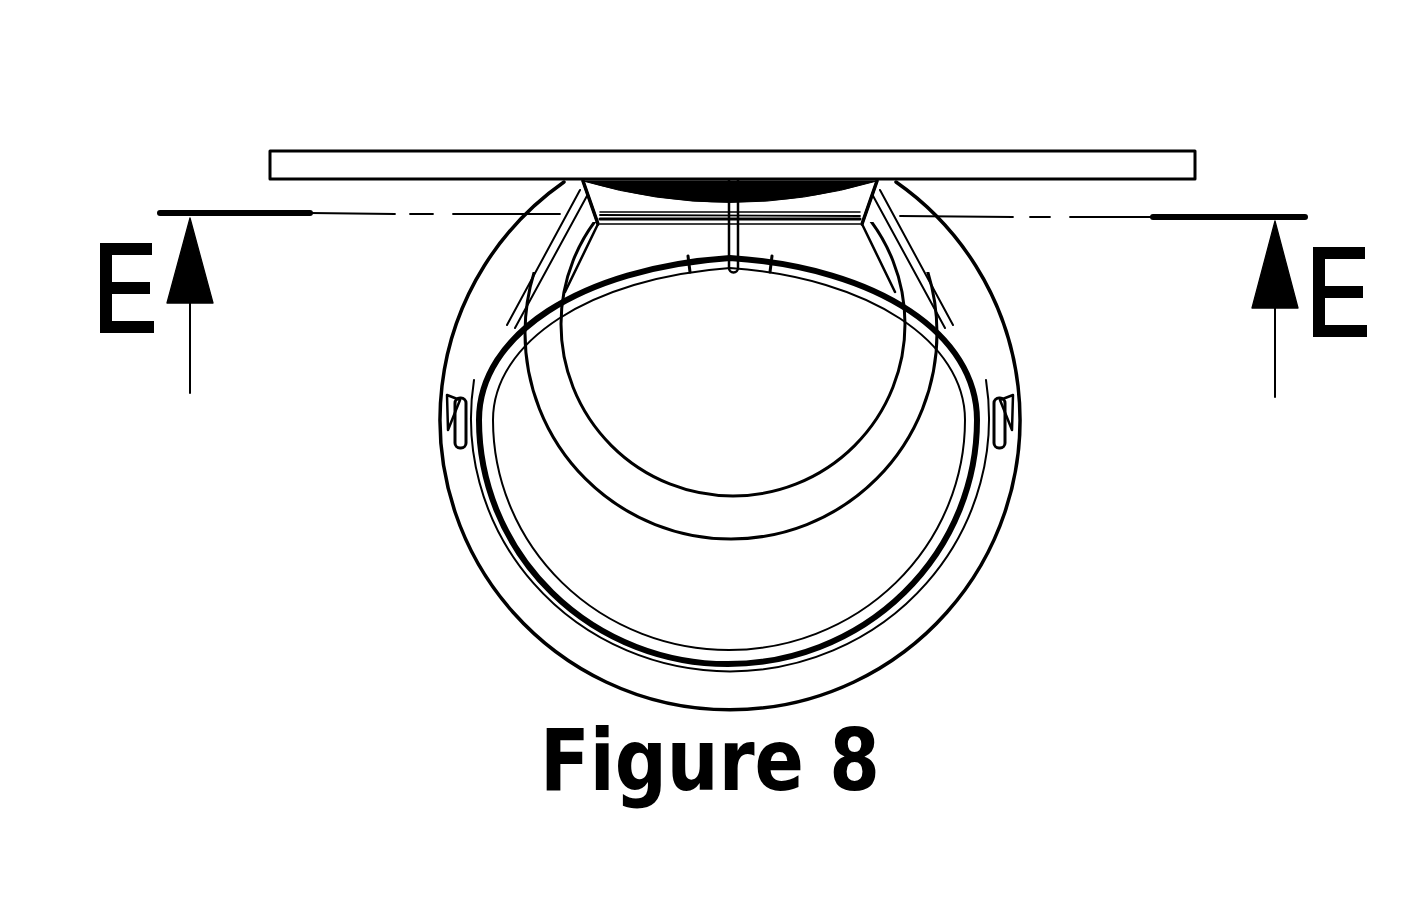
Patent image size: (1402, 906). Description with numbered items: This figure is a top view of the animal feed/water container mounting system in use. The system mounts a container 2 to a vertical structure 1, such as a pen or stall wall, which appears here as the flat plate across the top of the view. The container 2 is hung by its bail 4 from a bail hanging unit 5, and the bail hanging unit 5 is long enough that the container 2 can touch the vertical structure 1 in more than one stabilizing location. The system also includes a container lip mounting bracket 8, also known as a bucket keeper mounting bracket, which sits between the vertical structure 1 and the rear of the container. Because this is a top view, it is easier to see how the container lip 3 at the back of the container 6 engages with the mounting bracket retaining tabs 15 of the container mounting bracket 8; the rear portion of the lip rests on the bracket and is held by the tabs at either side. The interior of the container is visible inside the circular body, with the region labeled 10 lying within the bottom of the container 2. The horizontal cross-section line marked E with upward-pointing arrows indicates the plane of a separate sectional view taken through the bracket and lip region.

The vertical structure 1 is at (392, 162).
The container 2 is at (875, 544).
The container lip 3 is at (905, 636).
The bail 4 is at (948, 322).
The bail hanging unit 5 is at (752, 232).
The container 6 is at (650, 183).
The container lip mounting bracket 8 is at (762, 186).
The bottom 10 is at (645, 380).
The mounting bracket retaining tabs 15 is at (612, 184).